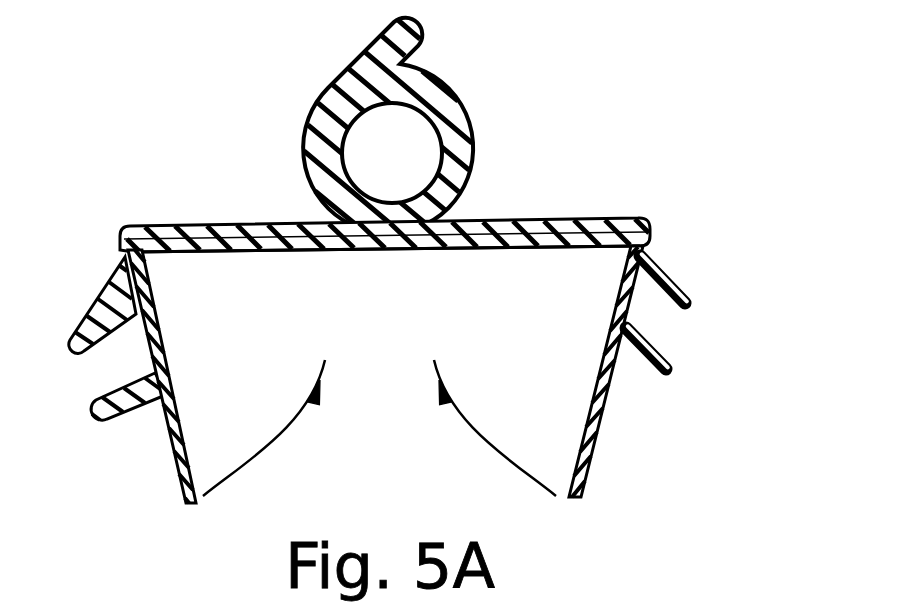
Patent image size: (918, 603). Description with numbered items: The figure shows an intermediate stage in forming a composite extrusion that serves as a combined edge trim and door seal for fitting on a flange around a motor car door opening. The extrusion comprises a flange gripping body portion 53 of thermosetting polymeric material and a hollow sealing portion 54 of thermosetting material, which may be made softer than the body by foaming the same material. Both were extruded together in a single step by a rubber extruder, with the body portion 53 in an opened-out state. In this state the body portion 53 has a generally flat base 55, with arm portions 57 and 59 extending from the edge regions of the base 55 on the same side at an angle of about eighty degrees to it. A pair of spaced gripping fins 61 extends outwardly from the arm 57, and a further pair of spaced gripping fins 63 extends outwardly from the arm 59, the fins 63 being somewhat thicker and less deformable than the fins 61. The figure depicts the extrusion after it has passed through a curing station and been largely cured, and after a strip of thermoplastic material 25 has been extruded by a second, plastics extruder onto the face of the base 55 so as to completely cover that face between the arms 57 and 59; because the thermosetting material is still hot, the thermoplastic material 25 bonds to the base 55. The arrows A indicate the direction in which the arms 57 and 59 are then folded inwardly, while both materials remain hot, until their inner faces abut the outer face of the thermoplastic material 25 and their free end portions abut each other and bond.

The flange gripping body portion 53 is at (387, 321).
The hollow sealing portion 54 is at (468, 122).
The flat base 55 is at (538, 222).
The strip of thermoplastic material 25 is at (485, 246).
The arm portion 57 is at (600, 430).
The arm portion 59 is at (172, 447).
The gripping fins 61 is at (693, 313).
The gripping fins 63 is at (83, 350).
The arrows A is at (462, 430).